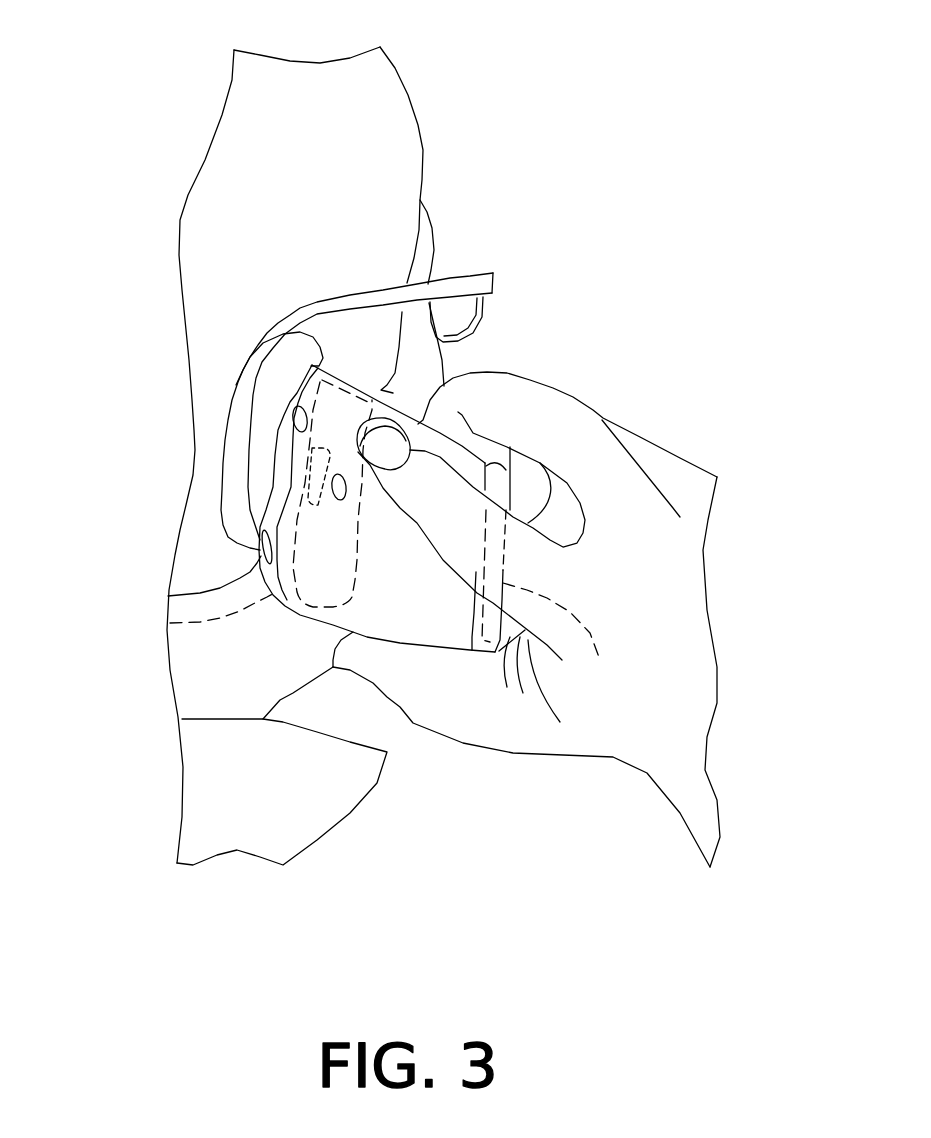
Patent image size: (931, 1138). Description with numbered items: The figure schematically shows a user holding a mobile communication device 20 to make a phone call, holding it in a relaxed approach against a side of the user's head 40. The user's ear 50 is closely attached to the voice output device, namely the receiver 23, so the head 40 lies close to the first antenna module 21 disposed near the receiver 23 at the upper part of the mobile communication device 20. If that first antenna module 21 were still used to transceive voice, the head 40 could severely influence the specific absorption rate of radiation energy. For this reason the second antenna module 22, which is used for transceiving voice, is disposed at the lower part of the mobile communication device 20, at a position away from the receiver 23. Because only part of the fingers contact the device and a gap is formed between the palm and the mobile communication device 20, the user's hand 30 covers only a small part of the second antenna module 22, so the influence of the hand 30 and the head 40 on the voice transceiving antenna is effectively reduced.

The mobile communication device 20 is at (305, 396).
The first antenna module 21 is at (166, 623).
The second antenna module 22 is at (600, 660).
The receiver 23 is at (330, 477).
The user's hand 30 is at (650, 480).
The user's head 40 is at (372, 120).
The user's ear 50 is at (278, 372).